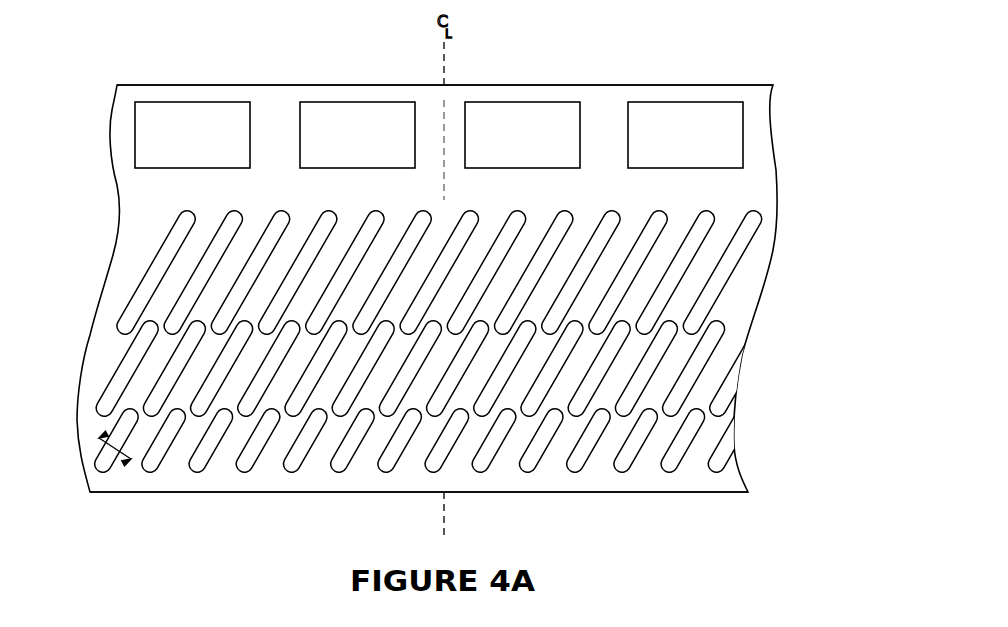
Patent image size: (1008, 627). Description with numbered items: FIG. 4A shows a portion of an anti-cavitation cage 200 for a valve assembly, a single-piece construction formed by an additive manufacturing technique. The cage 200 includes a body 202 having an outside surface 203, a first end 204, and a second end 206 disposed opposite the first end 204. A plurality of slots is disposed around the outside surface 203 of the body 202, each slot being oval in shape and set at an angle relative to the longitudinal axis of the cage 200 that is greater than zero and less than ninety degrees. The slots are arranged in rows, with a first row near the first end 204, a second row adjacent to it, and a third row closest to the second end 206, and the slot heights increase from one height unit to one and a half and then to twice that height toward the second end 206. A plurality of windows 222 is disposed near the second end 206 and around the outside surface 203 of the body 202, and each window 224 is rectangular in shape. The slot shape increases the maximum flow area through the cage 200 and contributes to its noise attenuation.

The anti-cavitation cage 200 is at (818, 97).
The body 202 is at (740, 197).
The outside surface 203 is at (740, 176).
The first end 204 is at (672, 493).
The second end 206 is at (668, 85).
The plurality of windows 222 is at (304, 86).
The window 224 is at (162, 108).